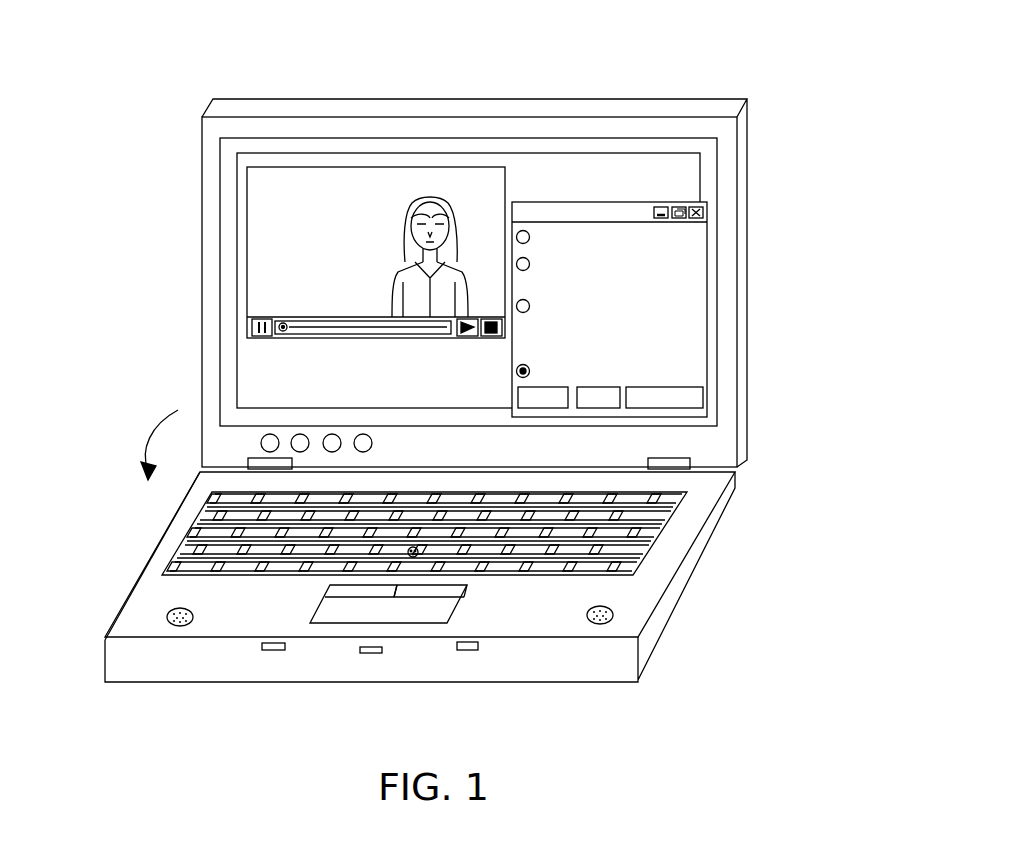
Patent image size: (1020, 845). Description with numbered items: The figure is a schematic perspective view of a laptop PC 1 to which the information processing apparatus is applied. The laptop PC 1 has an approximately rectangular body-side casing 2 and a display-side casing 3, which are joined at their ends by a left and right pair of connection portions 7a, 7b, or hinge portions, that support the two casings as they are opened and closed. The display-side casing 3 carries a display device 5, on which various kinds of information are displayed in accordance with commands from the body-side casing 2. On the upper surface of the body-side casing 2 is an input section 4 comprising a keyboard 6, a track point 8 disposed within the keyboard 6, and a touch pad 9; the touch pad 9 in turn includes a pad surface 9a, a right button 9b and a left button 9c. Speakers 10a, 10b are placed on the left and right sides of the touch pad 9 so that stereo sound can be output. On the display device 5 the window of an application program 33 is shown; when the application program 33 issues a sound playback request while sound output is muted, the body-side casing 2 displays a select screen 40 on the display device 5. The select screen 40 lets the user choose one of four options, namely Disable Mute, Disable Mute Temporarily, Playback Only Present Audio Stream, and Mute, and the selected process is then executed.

The laptop PC 1 is at (647, 63).
The body-side casing 2 is at (656, 653).
The display-side casing 3 is at (749, 275).
The input section 4 is at (165, 541).
The display device 5 is at (228, 265).
The keyboard 6 is at (200, 563).
The connection portion (hinge portion) 7a is at (258, 460).
The connection portion (hinge portion) 7b is at (682, 466).
The track point 8 is at (313, 560).
The touch pad 9 is at (485, 608).
The pad surface 9a is at (349, 617).
The right button 9b is at (470, 588).
The left button 9c is at (327, 587).
The speaker 10a is at (172, 627).
The speaker 10b is at (601, 627).
The application program 33 is at (680, 176).
The select screen 40 is at (683, 373).